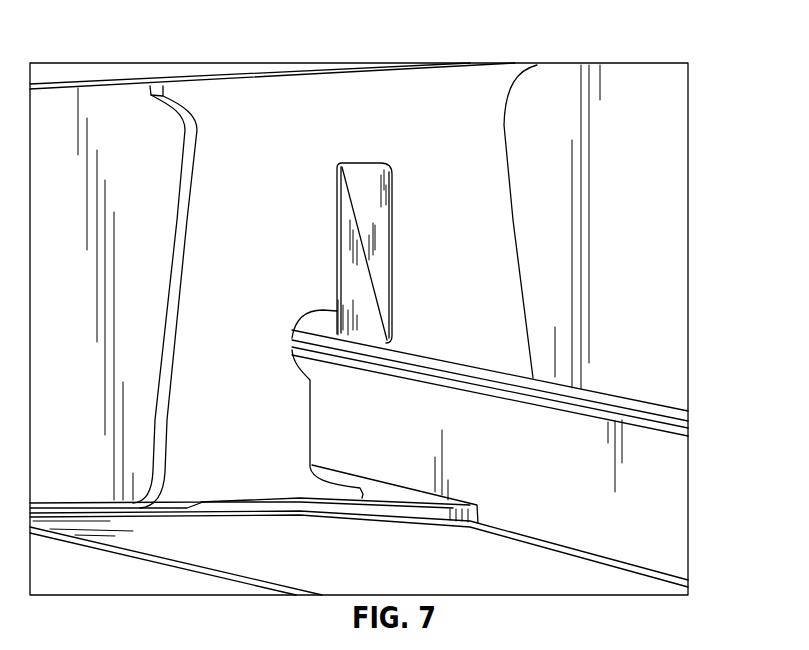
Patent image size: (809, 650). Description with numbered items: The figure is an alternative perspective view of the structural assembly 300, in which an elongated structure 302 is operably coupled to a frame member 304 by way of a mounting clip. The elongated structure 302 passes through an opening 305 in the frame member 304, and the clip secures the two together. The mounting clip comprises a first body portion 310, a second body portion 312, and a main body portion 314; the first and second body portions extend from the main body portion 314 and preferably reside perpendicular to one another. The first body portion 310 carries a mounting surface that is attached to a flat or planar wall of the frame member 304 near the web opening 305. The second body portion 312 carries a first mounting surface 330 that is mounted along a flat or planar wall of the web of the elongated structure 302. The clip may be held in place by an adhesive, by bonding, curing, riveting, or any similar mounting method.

The structural assembly 300 is at (592, 29).
The elongated structure 302 is at (368, 174).
The frame member 304 is at (667, 243).
The opening 305 is at (323, 320).
The first body portion 310 is at (365, 197).
The second body portion 312 is at (367, 323).
The main body portion 314 is at (343, 238).
The first mounting surface 330 is at (360, 298).